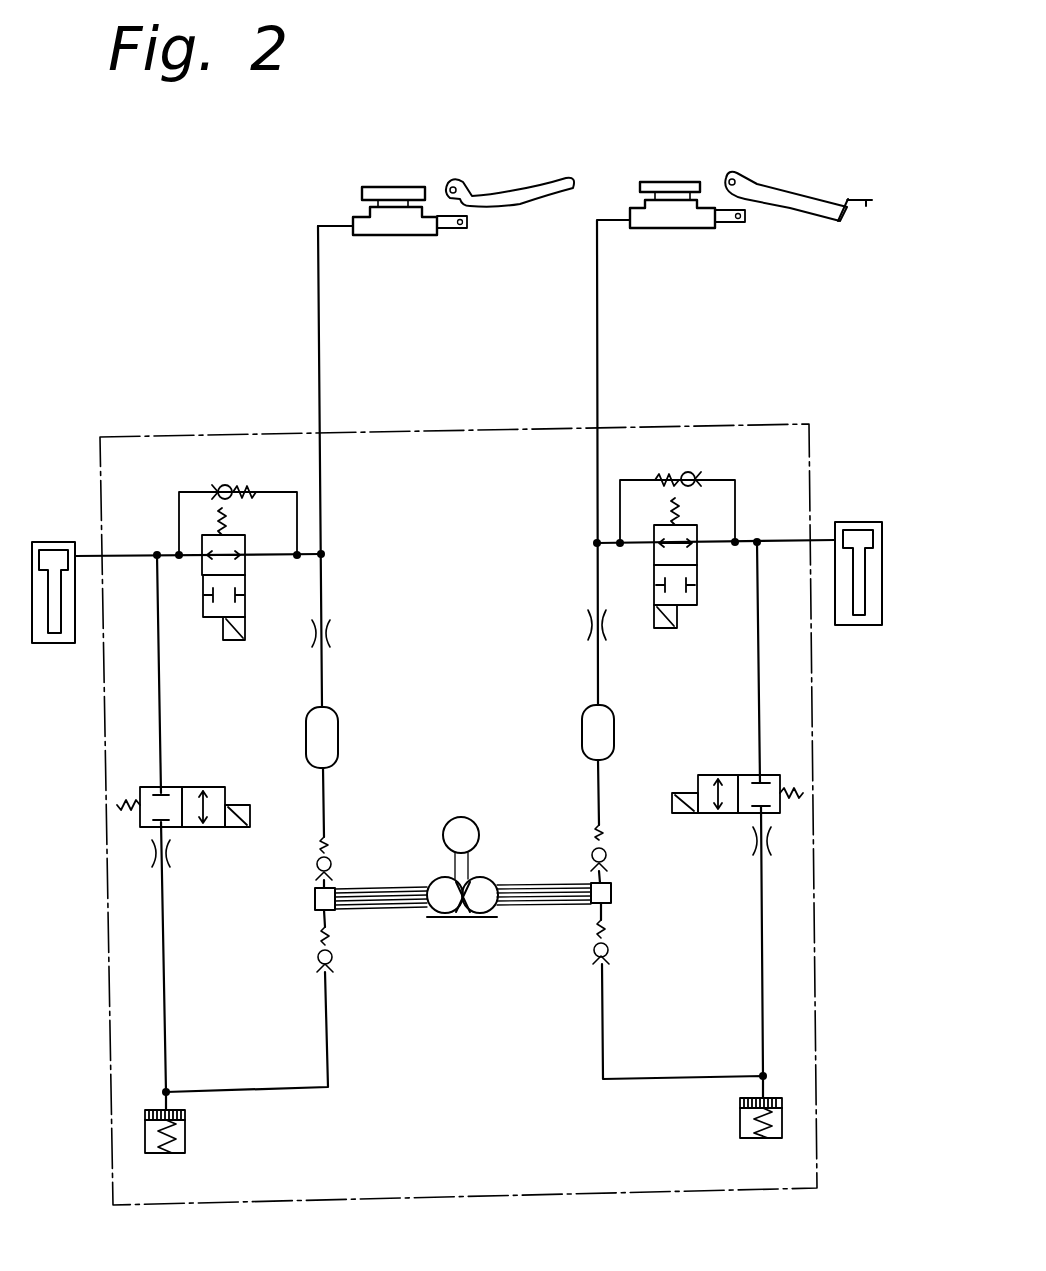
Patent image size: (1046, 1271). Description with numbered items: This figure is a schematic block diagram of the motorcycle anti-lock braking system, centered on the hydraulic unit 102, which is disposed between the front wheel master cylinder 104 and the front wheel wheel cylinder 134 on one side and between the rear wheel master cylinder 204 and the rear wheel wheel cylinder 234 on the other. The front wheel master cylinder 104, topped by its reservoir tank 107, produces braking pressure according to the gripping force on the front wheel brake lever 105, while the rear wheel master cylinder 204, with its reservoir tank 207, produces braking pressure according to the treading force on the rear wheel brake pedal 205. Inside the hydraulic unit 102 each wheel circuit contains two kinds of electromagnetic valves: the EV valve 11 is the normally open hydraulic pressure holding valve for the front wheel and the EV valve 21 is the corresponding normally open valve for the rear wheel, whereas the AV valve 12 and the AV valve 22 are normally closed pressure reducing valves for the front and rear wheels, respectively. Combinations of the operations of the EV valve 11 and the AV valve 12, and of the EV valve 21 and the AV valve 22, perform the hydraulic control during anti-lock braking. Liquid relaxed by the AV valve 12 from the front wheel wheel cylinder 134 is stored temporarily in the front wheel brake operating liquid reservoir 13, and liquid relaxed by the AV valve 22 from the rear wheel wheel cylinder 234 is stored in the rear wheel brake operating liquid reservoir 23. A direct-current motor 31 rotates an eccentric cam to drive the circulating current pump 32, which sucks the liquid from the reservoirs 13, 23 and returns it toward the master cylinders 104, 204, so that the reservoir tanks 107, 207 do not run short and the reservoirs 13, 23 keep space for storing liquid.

The hydraulic unit 102 is at (483, 424).
The front wheel master cylinder 104 is at (393, 237).
The front wheel brake lever 105 is at (513, 201).
The reservoir tank 107 is at (388, 187).
The rear wheel master cylinder 204 is at (673, 230).
The rear wheel brake pedal 205 is at (838, 218).
The reservoir tank 207 is at (665, 182).
The EV valve 11 is at (214, 618).
The AV valve 12 is at (192, 827).
The front wheel brake operating liquid reservoir 13 is at (185, 1130).
The EV valve 21 is at (685, 606).
The AV valve 22 is at (727, 813).
The rear wheel brake operating liquid reservoir 23 is at (740, 1118).
The direct-current motor 31 is at (462, 816).
The circulating current pump 32 is at (482, 876).
The front wheel wheel cylinder 134 is at (52, 643).
The rear wheel wheel cylinder 234 is at (860, 625).